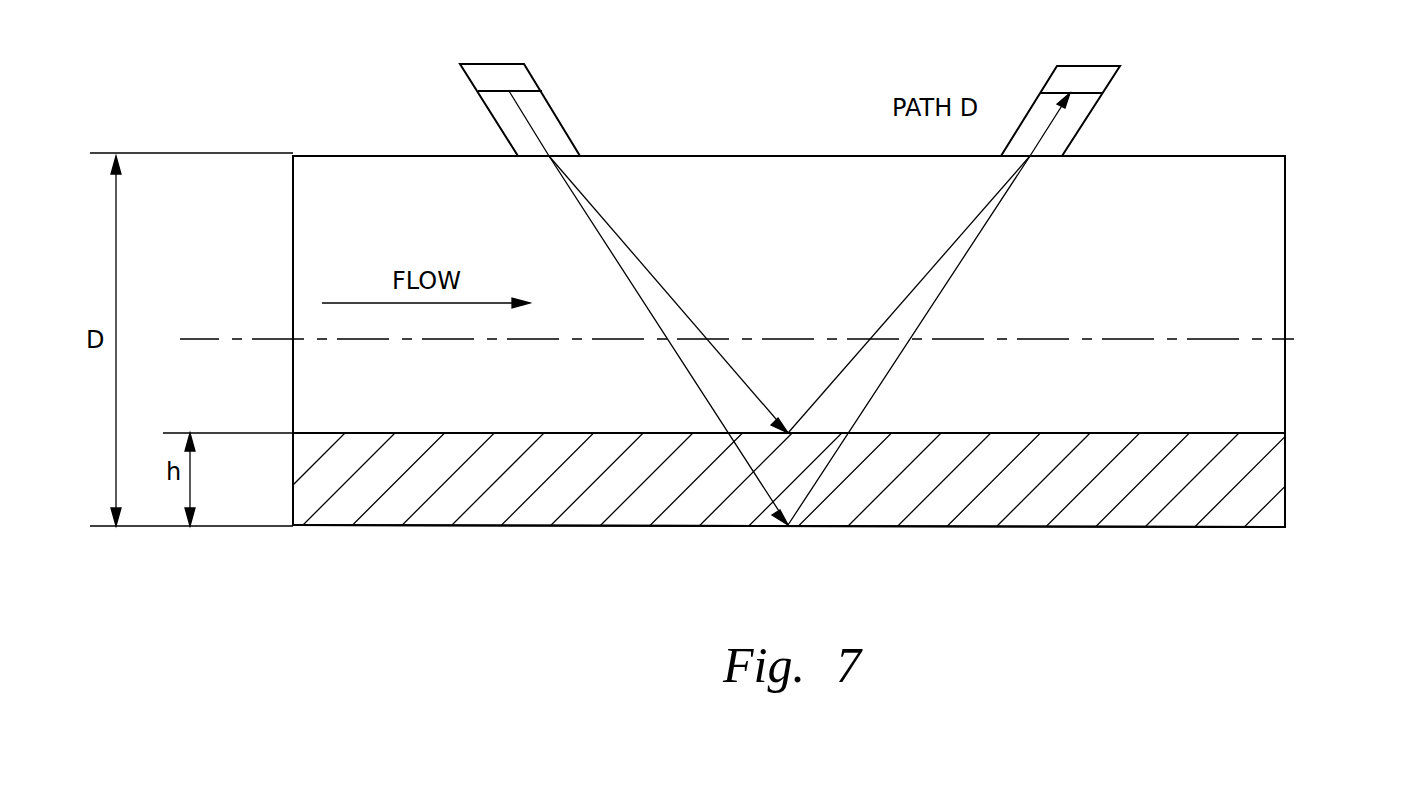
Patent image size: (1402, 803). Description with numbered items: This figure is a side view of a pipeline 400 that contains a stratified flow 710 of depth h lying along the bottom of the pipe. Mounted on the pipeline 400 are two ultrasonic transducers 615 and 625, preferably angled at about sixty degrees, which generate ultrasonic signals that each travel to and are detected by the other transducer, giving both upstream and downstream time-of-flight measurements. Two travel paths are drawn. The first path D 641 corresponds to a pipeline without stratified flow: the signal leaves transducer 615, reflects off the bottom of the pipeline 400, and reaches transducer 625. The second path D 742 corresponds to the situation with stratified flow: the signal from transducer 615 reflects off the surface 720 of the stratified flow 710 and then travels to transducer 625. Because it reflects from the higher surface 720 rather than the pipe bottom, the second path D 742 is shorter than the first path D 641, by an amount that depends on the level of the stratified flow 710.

The pipeline 400 is at (1203, 156).
The ultrasonic transducer 615 is at (550, 103).
The ultrasonic transducer 625 is at (1083, 126).
The first path D 641 is at (946, 283).
The second path D 742 is at (653, 273).
The stratified flow 710 is at (1228, 522).
The surface of stratified flow 720 is at (1117, 433).